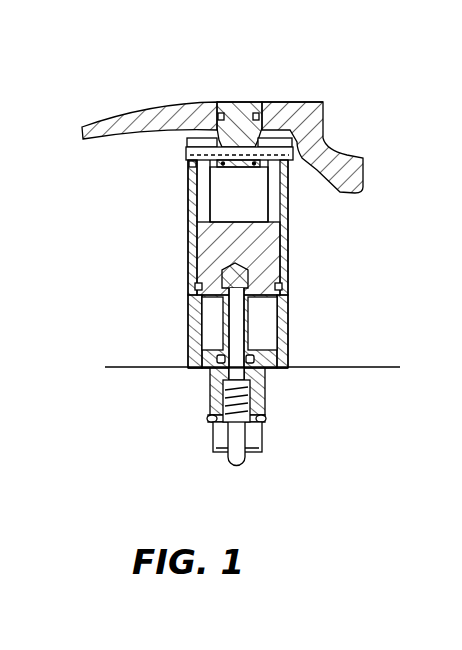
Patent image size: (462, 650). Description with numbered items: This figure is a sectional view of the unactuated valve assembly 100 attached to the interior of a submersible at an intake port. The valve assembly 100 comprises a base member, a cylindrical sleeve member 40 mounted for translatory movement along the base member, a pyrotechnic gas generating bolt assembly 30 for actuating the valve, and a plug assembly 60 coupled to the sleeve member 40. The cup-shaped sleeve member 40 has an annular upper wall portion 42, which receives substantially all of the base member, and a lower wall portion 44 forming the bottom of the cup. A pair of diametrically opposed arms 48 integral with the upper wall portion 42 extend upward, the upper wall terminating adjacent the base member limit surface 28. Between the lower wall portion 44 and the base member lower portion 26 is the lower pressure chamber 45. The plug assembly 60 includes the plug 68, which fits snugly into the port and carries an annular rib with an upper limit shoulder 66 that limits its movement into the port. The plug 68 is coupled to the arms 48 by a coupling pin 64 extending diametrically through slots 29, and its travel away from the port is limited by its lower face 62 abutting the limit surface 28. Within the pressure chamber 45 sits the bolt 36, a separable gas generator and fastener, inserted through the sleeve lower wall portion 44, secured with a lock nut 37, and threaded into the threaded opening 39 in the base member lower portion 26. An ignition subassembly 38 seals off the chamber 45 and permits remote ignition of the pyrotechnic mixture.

The valve assembly 100 is at (120, 262).
The plug assembly 60 is at (258, 84).
The plug 68 is at (232, 112).
The upper limit shoulder 66 is at (293, 122).
The coupling pin 64 is at (186, 153).
The lower face 62 is at (247, 166).
The arms 48 is at (190, 168).
The limit surface 28 is at (226, 222).
The slots 29 is at (193, 217).
The base member lower portion 26 is at (272, 290).
The upper wall portion 42 is at (196, 243).
The threaded opening 39 is at (200, 288).
The lower pressure chamber 45 is at (204, 322).
The bolt 36 is at (217, 357).
The lock nut 37 is at (284, 334).
The sleeve member 40 is at (336, 331).
The pyrotechnic gas generating bolt assembly 30 is at (198, 390).
The lower wall portion 44 is at (268, 369).
The ignition subassembly 38 is at (240, 403).